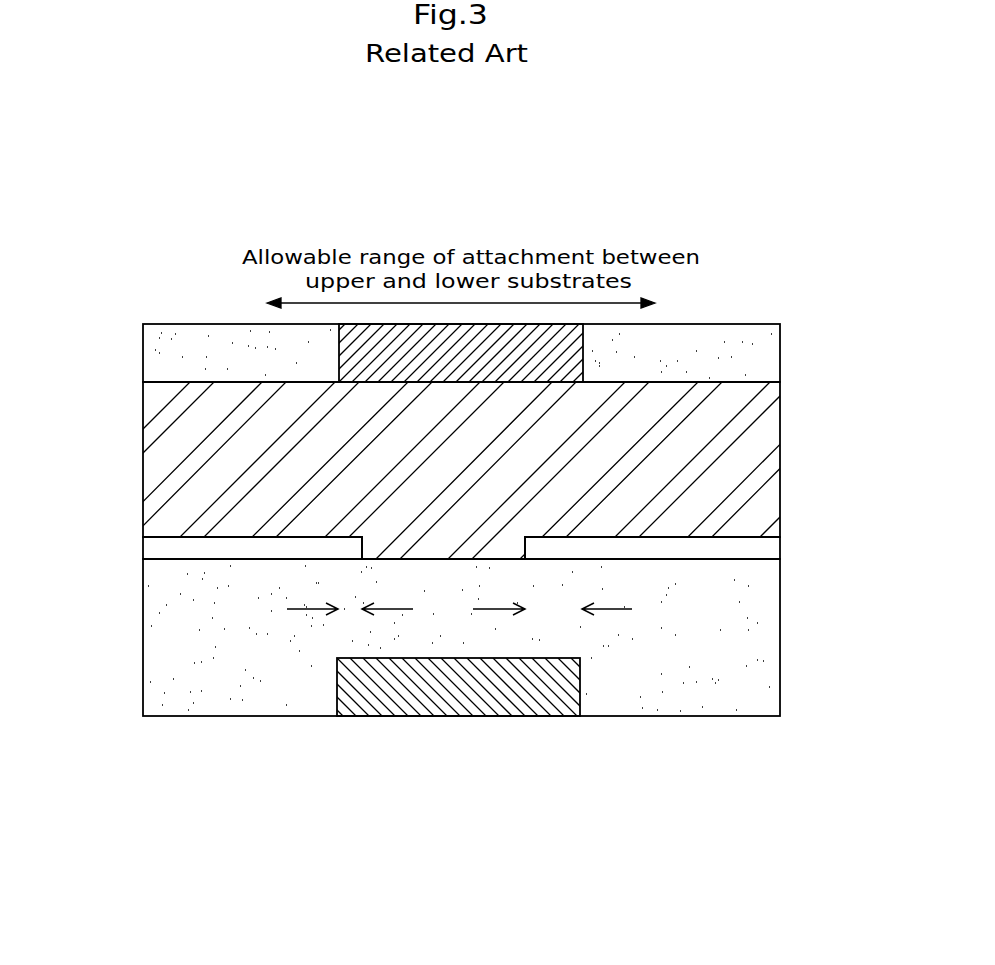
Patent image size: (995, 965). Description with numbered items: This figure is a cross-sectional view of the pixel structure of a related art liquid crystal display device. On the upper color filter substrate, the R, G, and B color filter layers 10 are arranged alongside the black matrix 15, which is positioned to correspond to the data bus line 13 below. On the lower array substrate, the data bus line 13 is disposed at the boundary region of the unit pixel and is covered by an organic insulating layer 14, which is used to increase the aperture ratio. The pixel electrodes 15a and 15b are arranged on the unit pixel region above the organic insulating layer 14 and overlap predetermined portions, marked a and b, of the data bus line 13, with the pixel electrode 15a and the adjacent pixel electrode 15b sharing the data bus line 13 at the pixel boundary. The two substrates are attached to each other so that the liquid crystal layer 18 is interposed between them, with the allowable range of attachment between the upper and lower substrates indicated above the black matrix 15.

The color filter layer 10 is at (750, 353).
The data bus line 13 is at (506, 698).
The organic insulating layer 14 is at (748, 640).
The black matrix 15 is at (338, 344).
The pixel electrode 15a is at (748, 552).
The pixel electrode 15b is at (156, 550).
The liquid crystal layer 18 is at (750, 465).